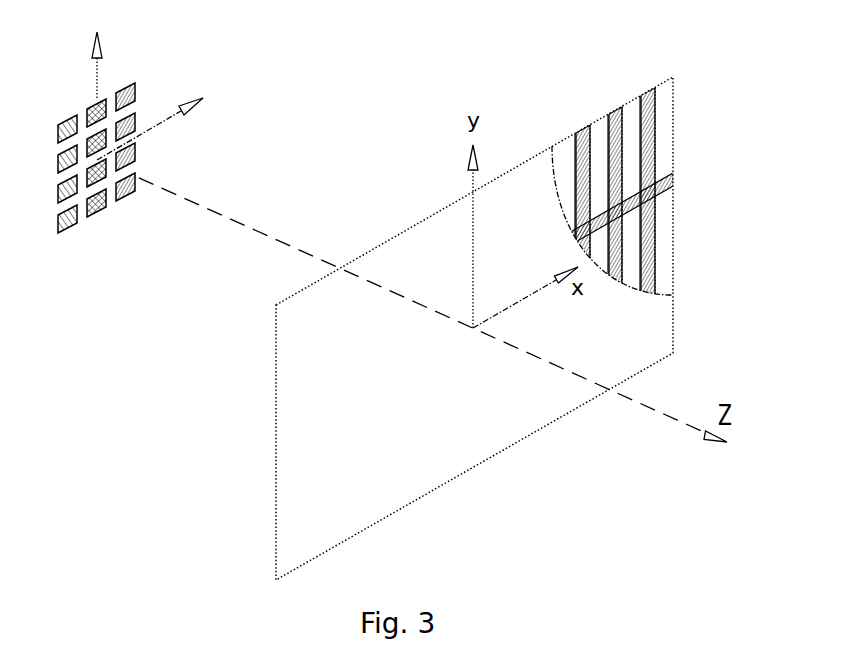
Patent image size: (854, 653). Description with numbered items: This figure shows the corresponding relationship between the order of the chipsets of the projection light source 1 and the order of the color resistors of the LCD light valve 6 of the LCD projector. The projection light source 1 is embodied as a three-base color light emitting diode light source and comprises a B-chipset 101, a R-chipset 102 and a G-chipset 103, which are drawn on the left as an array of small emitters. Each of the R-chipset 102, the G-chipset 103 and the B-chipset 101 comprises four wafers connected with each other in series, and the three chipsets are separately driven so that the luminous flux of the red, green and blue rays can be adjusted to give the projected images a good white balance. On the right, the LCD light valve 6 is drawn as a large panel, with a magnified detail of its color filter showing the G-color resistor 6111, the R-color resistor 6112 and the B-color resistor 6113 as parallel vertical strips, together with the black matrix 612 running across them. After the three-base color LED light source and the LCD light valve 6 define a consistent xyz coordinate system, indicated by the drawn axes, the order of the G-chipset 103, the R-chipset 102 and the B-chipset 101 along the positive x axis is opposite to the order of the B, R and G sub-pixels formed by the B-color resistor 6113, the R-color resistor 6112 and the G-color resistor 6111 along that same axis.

The projection light source 1 is at (138, 208).
The B-chipset 101 is at (124, 201).
The R-chipset 102 is at (97, 219).
The G-chipset 103 is at (67, 236).
The LCD light valve 6 is at (509, 293).
The G-color resistor 6111 is at (660, 85).
The R-color resistor 6112 is at (632, 105).
The B-color resistor 6113 is at (600, 123).
The black matrix 612 is at (673, 178).